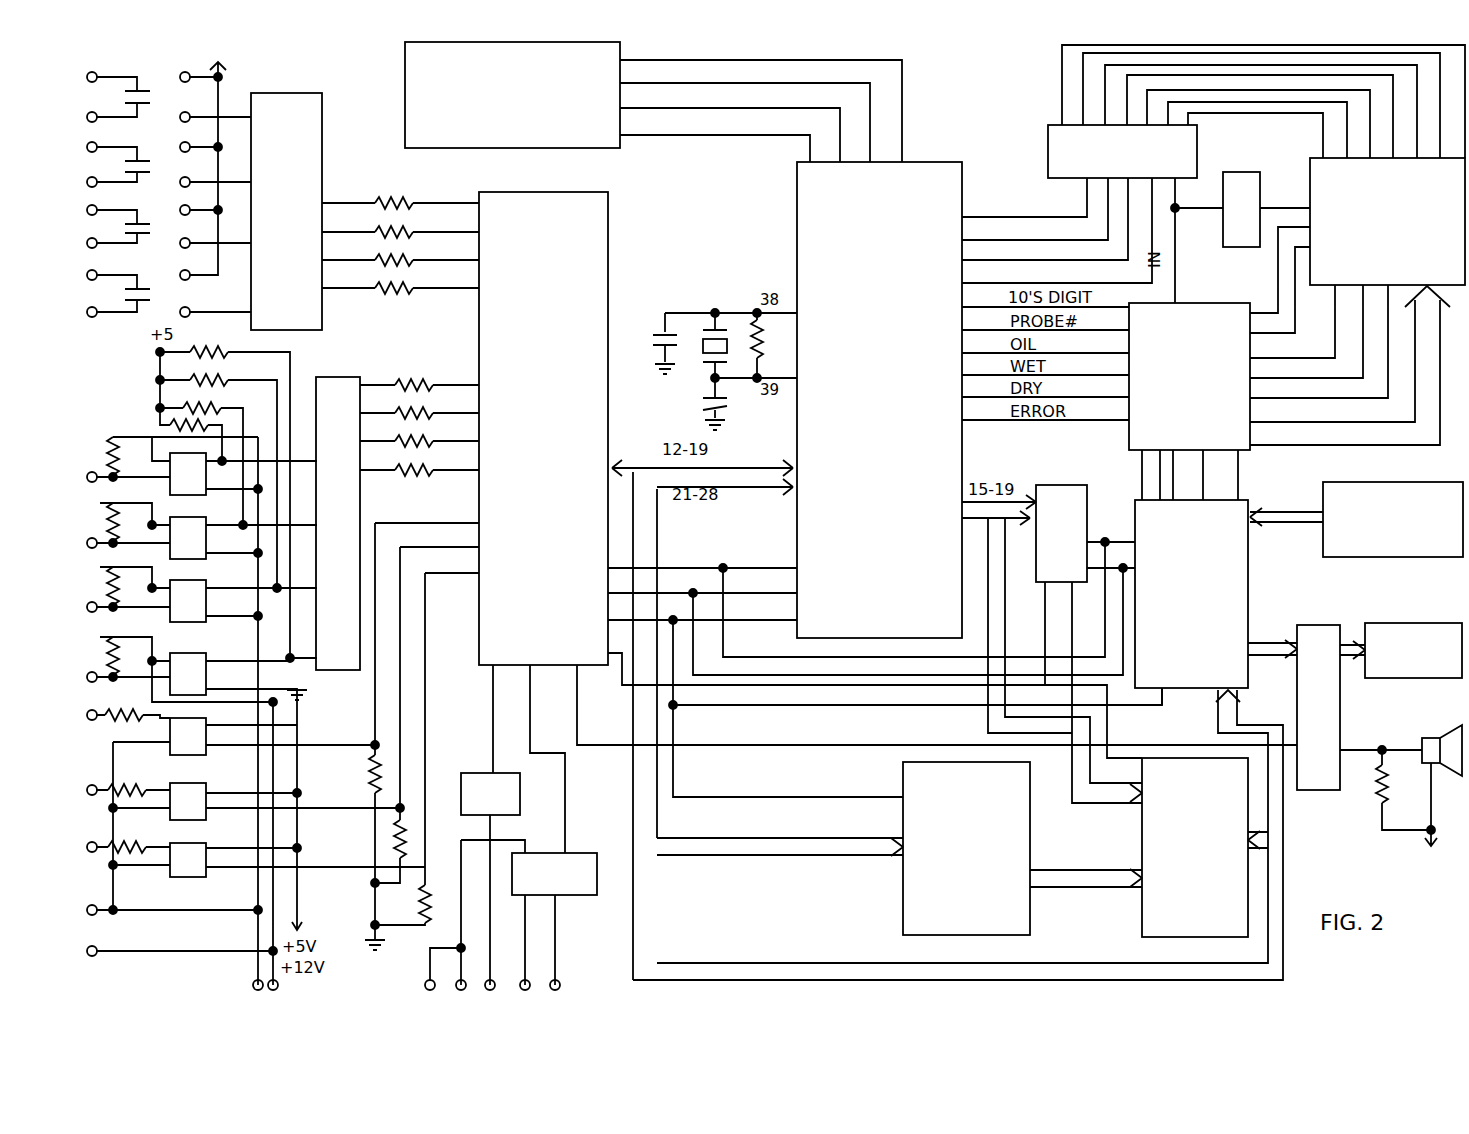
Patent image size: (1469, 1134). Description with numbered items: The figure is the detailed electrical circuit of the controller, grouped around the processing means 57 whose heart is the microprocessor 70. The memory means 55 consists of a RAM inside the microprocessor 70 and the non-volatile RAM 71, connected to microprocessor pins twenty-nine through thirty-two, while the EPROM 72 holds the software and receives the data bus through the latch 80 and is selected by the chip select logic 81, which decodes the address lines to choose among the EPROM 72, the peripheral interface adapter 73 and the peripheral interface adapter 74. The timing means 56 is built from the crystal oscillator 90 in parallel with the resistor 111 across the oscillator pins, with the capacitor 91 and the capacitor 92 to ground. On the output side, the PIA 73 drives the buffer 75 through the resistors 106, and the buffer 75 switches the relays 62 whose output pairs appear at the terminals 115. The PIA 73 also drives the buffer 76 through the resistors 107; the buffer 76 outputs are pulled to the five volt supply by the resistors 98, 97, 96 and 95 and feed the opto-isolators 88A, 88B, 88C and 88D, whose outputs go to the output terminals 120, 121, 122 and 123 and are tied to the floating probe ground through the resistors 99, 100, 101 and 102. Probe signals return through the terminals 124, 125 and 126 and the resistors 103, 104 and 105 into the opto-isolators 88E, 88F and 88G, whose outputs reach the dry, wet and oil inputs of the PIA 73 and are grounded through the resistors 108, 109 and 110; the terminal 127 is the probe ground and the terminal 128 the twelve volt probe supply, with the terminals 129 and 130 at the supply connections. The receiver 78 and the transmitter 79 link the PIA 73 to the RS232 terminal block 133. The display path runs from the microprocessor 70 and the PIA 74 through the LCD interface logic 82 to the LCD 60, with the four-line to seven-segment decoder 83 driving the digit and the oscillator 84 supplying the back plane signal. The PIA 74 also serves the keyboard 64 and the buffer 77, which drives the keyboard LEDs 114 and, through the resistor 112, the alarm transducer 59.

The relays 62 is at (168, 76).
The relay output terminals 115 is at (96, 322).
The buffer 75 is at (322, 138).
The resistors 106 is at (374, 196).
The memory means 55 is at (400, 80).
The non-volatile RAM 71 is at (620, 148).
The peripheral interface adapter 73 is at (608, 232).
The resistors 107 is at (409, 376).
The buffer 76 is at (337, 377).
The resistor 95 is at (198, 350).
The resistor 96 is at (240, 382).
The resistor 97 is at (226, 410).
The resistor 98 is at (212, 426).
The resistor 99 is at (115, 437).
The resistor 100 is at (97, 508).
The resistor 101 is at (101, 571).
The resistor 102 is at (99, 640).
The resistor 103 is at (99, 712).
The resistor 104 is at (103, 788).
The resistor 105 is at (103, 846).
The output terminal 120 is at (94, 462).
The output terminal 121 is at (92, 540).
The output terminal 122 is at (91, 604).
The output terminal 123 is at (89, 674).
The output terminal 124 is at (80, 724).
The output terminal 125 is at (74, 793).
The output terminal 126 is at (74, 850).
The output terminal 127 is at (72, 912).
The output terminal 128 is at (72, 953).
The terminal 129 is at (252, 987).
The terminal 130 is at (278, 985).
The opto-isolator 88A is at (234, 470).
The opto-isolator 88B is at (208, 538).
The opto-isolator 88C is at (216, 601).
The opto-isolator 88D is at (231, 674).
The opto-isolator 88E is at (244, 741).
The opto-isolator 88F is at (254, 806).
The opto-isolator 88G is at (267, 863).
The resistor 108 is at (397, 705).
The resistor 109 is at (397, 736).
The resistor 110 is at (398, 761).
The receiver 78 is at (470, 773).
The transmitter 79 is at (587, 852).
The terminal block 133 is at (562, 988).
The timing means 56 is at (662, 304).
The capacitor 91 is at (658, 316).
The crystal oscillator 90 is at (727, 328).
The capacitor 92 is at (705, 402).
The resistor 111 is at (775, 345).
The microprocessor 70 is at (797, 182).
The processing means 57 is at (956, 145).
The 4 line to 7 segment decoder 83 is at (1048, 140).
The oscillator 84 is at (1262, 172).
The LCD 60 is at (1310, 168).
The LCD interface logic 82 is at (1129, 448).
The chip select logic 81 is at (1036, 486).
The peripheral interface adapter 74 is at (1248, 562).
The keyboard 64 is at (1400, 557).
The buffer 77 is at (1348, 688).
The keyboard LEDs 114 is at (1414, 680).
The resistor 112 is at (1380, 790).
The alarm transducer 59 is at (1452, 730).
The latch 80 is at (903, 922).
The EPROM 72 is at (1142, 930).